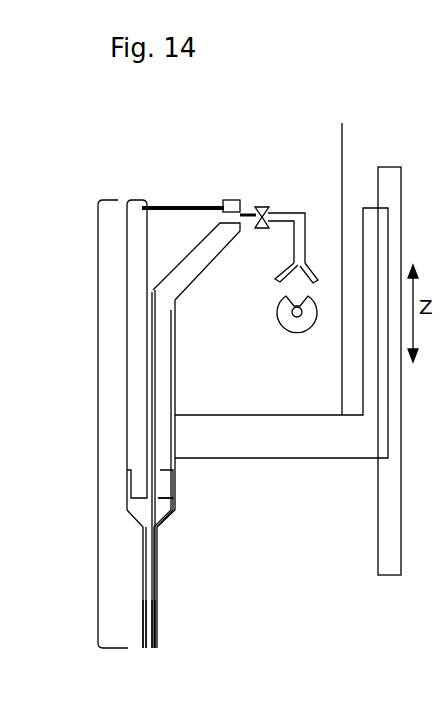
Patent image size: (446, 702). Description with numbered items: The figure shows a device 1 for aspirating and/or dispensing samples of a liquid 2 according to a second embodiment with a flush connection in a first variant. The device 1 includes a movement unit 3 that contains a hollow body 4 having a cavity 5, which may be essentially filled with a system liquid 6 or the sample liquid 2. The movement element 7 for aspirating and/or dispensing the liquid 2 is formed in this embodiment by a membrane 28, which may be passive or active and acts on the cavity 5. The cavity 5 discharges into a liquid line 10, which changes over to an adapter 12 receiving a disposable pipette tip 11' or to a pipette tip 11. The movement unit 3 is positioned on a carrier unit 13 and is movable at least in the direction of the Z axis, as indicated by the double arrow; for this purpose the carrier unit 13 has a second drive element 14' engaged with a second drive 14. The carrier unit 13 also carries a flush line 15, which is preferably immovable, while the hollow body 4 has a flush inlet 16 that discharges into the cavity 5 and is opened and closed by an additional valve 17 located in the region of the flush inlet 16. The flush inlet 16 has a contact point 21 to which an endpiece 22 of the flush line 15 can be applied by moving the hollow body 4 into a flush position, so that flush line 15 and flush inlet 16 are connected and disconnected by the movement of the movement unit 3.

The device 1 is at (76, 124).
The liquid 2 is at (153, 463).
The movement unit 3 is at (97, 424).
The hollow body 4 is at (208, 248).
The cavity 5 is at (215, 449).
The system liquid 6 is at (161, 470).
The movement element 7 is at (152, 199).
The liquid line 10 is at (146, 415).
The pipette tip 11 is at (223, 624).
The disposable pipette tip 11' is at (153, 624).
The adapter 12 is at (157, 487).
The carrier unit 13 is at (393, 428).
The second drive 14 is at (342, 246).
The second drive element 14' is at (281, 333).
The flush line 15 is at (300, 316).
The flush inlet 16 is at (298, 212).
The valve 17 is at (267, 206).
The contact point 21 is at (307, 267).
The endpiece 22 is at (282, 310).
The membrane 28 is at (183, 149).